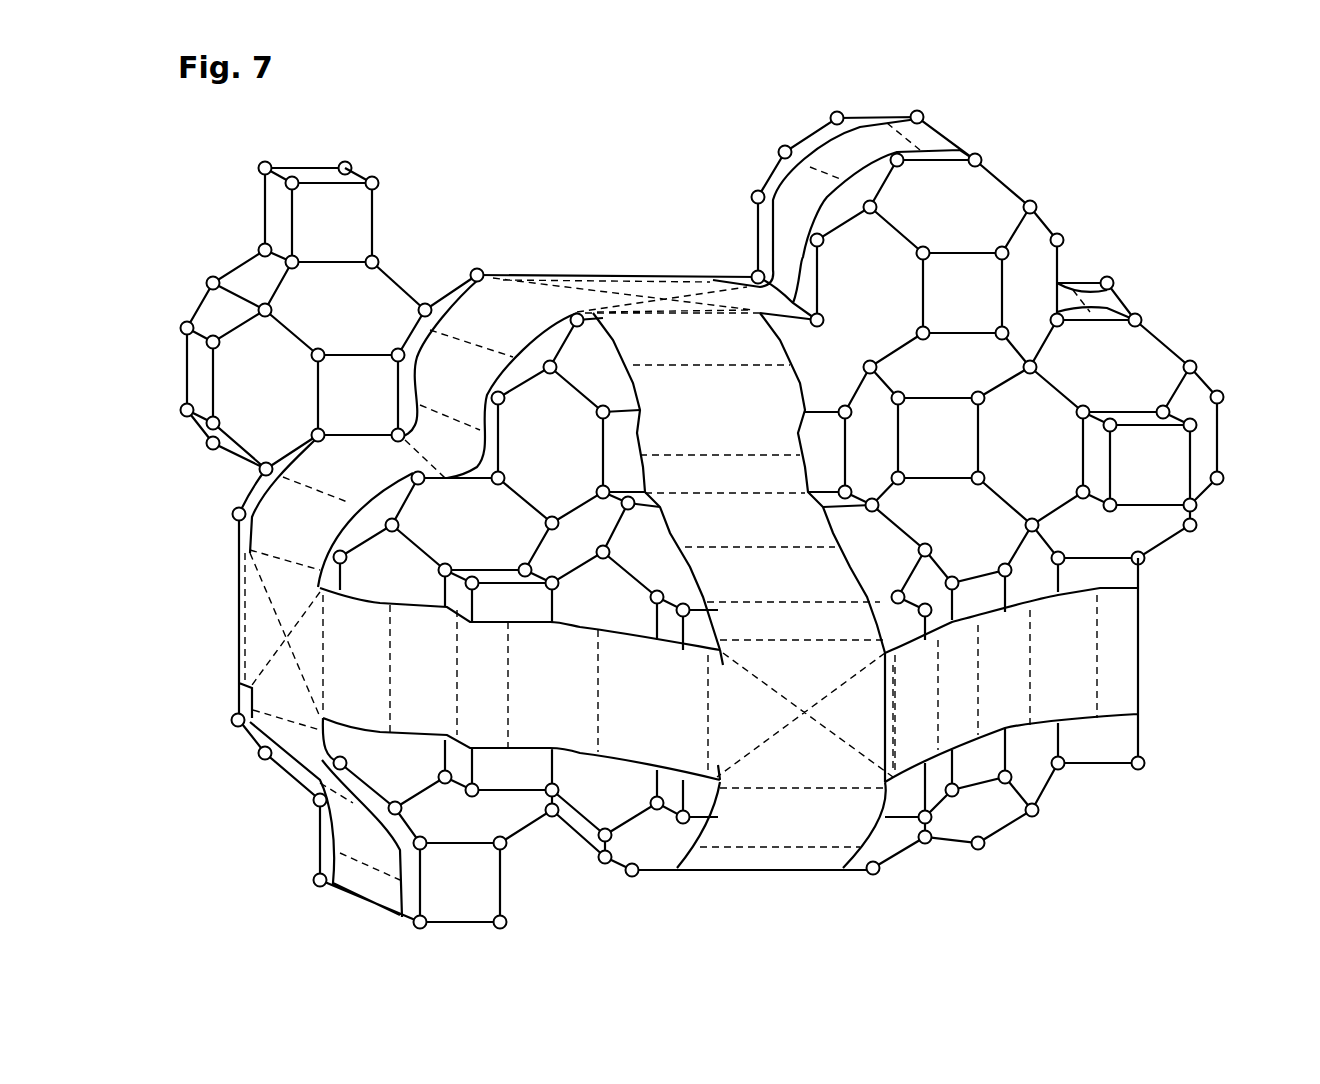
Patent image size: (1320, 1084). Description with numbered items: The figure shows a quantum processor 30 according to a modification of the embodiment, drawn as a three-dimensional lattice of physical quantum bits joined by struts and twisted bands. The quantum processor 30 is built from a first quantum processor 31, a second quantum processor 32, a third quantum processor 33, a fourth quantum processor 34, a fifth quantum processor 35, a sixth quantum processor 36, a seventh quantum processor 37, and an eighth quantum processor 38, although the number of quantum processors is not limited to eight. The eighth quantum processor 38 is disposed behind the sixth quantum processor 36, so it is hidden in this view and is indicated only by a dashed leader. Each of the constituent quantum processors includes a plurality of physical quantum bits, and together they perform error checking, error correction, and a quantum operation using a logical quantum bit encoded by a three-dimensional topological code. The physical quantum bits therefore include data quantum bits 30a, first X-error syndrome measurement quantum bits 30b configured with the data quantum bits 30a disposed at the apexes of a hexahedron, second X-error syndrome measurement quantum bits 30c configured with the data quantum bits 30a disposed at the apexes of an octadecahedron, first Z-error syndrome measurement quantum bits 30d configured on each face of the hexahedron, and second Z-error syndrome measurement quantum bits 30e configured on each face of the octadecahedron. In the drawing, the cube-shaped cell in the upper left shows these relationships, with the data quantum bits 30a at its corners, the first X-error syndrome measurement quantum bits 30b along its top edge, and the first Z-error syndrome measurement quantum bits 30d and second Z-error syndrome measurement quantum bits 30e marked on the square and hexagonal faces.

The quantum processor 30 is at (637, 126).
The data quantum bits 30a is at (378, 180).
The first X-error syndrome measurement quantum bits 30b is at (305, 168).
The second X-error syndrome measurement quantum bits 30c is at (405, 283).
The first Z-error syndrome measurement quantum bits 30d is at (353, 240).
The second Z-error syndrome measurement quantum bits 30e is at (368, 320).
The first quantum processor 31 is at (378, 134).
The second quantum processor 32 is at (870, 108).
The third quantum processor 33 is at (580, 305).
The fourth quantum processor 34 is at (1057, 205).
The fifth quantum processor 35 is at (538, 882).
The sixth quantum processor 36 is at (1015, 850).
The seventh quantum processor 37 is at (270, 788).
The eighth quantum processor 38 is at (1101, 787).